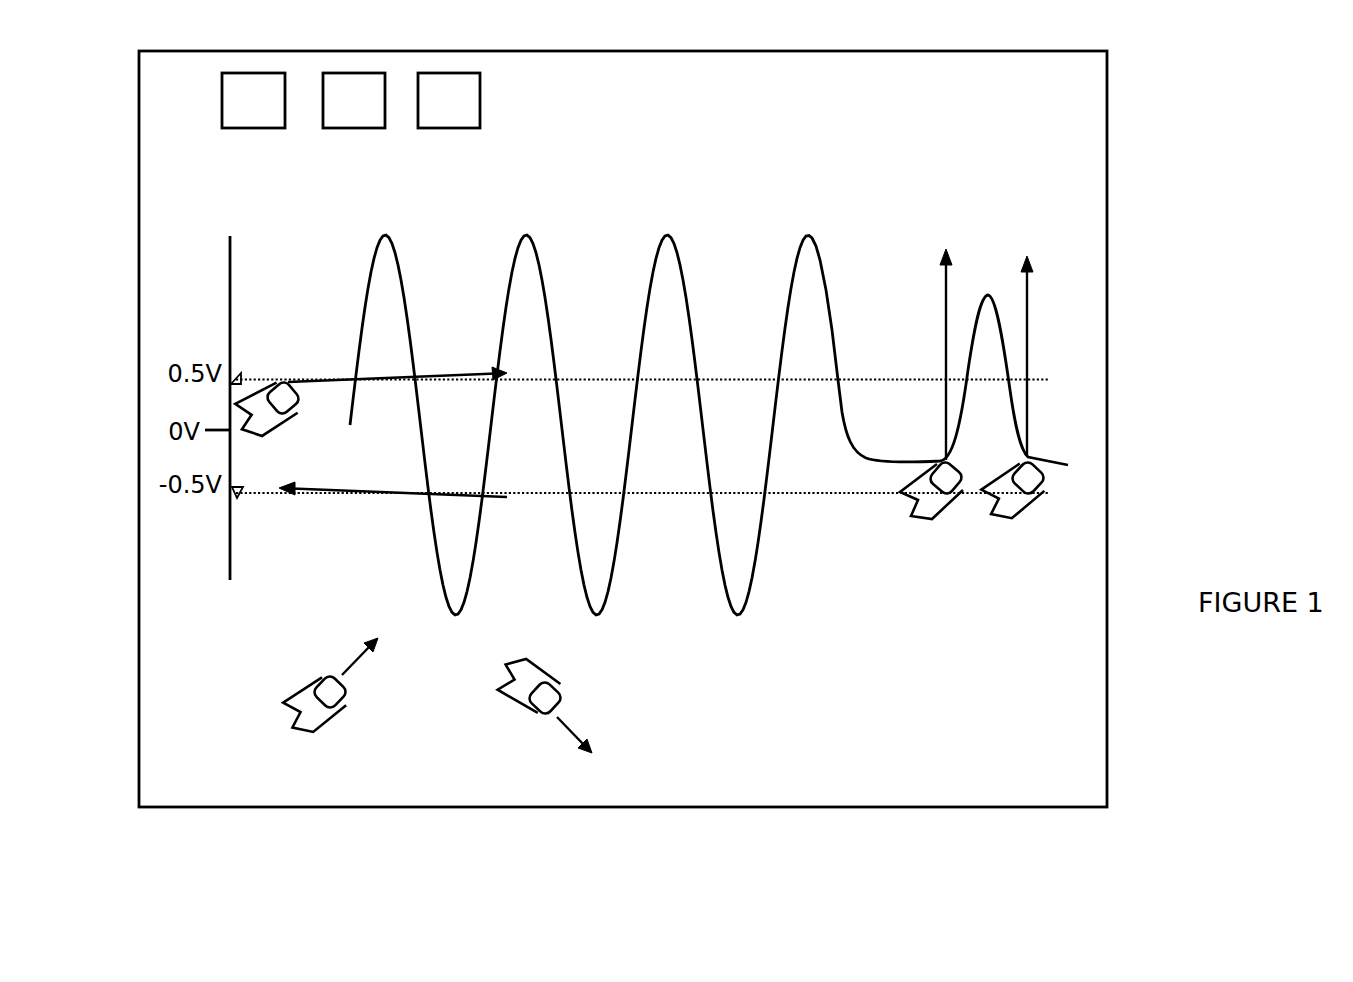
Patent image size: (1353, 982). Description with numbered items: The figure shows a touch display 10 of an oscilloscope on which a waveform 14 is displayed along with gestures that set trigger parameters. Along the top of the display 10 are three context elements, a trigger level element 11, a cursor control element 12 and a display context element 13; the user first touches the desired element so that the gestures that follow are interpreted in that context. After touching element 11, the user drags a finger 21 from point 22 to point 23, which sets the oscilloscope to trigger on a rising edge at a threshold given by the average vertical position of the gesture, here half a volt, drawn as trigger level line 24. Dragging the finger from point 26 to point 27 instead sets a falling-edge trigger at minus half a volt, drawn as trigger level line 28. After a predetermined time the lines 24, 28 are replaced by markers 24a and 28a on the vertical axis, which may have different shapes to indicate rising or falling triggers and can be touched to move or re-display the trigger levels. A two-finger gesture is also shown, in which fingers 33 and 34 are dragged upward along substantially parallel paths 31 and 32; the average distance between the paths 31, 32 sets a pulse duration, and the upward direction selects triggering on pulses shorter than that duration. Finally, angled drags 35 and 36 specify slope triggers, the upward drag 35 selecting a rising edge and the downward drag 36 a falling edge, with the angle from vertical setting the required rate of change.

The display 10 is at (1106, 163).
The trigger level context element 11 is at (245, 128).
The cursor control context element 12 is at (352, 128).
The display context element 13 is at (448, 128).
The waveform 14 is at (395, 250).
The user's finger 21 is at (298, 452).
The starting point of rising-edge gesture 22 is at (382, 363).
The ending point of rising-edge gesture 23 is at (516, 362).
The rising-edge trigger level line 24 is at (732, 378).
The rising-edge trigger marker 24a is at (236, 379).
The starting point of falling-edge gesture 26 is at (406, 510).
The ending point of falling-edge gesture 27 is at (271, 477).
The falling-edge trigger level line 28 is at (742, 492).
The falling-edge trigger marker 28a is at (234, 496).
The first finger path 31 is at (945, 324).
The second finger path 32 is at (1029, 318).
The first finger 33 is at (928, 510).
The second finger 34 is at (1007, 512).
The upward angled slope gesture 35 is at (323, 715).
The downward angled slope gesture 36 is at (537, 673).